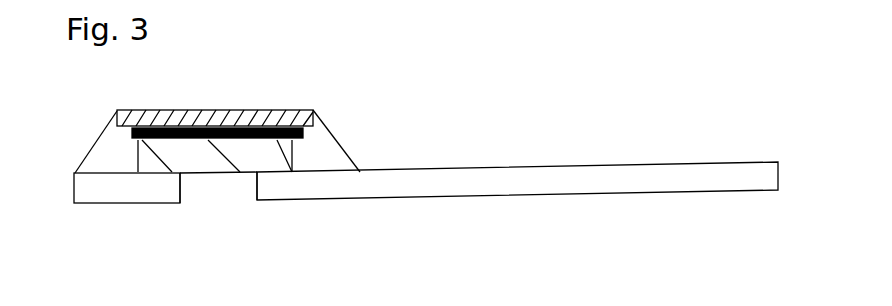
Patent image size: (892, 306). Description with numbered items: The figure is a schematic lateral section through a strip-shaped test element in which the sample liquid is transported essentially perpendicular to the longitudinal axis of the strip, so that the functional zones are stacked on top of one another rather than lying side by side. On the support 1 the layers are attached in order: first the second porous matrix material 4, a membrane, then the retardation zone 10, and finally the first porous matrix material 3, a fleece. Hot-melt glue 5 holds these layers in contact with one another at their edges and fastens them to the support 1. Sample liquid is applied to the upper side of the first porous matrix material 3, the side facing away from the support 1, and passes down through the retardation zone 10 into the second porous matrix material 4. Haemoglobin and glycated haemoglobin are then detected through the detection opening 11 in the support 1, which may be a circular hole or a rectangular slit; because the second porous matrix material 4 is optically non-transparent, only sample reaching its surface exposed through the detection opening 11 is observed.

The support 1 is at (120, 189).
The first porous matrix material 3 is at (190, 112).
The second porous matrix material 4 is at (270, 157).
The glue 5 is at (110, 152).
The retardation zone 10 is at (303, 130).
The detection opening 11 is at (235, 190).